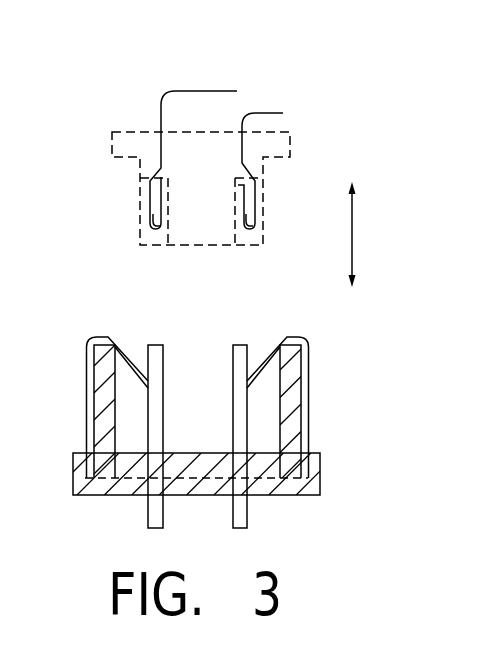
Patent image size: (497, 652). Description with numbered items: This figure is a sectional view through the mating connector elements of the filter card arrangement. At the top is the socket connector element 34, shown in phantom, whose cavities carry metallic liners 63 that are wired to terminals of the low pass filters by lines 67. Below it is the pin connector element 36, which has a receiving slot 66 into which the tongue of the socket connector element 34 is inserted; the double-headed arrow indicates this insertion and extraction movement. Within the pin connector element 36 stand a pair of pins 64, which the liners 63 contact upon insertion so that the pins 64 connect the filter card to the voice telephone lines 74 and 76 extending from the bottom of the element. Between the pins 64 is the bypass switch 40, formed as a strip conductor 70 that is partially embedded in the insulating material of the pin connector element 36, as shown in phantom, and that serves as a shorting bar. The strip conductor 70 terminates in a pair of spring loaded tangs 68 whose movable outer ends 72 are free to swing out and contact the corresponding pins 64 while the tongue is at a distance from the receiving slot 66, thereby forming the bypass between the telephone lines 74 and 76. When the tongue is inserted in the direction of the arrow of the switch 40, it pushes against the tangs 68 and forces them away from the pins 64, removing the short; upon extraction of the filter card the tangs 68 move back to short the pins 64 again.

The socket connector element 34 is at (142, 124).
The lines 67 is at (197, 91).
The metallic liners 63 is at (153, 215).
The bypass switch 40 is at (198, 420).
The spring loaded tangs 68 is at (100, 336).
The pins 64 is at (156, 345).
The movable outer ends 72 is at (86, 362).
The strip conductor 70 is at (86, 438).
The receiving slot 66 is at (276, 413).
The pin connector element 36 is at (320, 476).
The voice telephone line 74 is at (148, 520).
The voice telephone line 76 is at (247, 519).